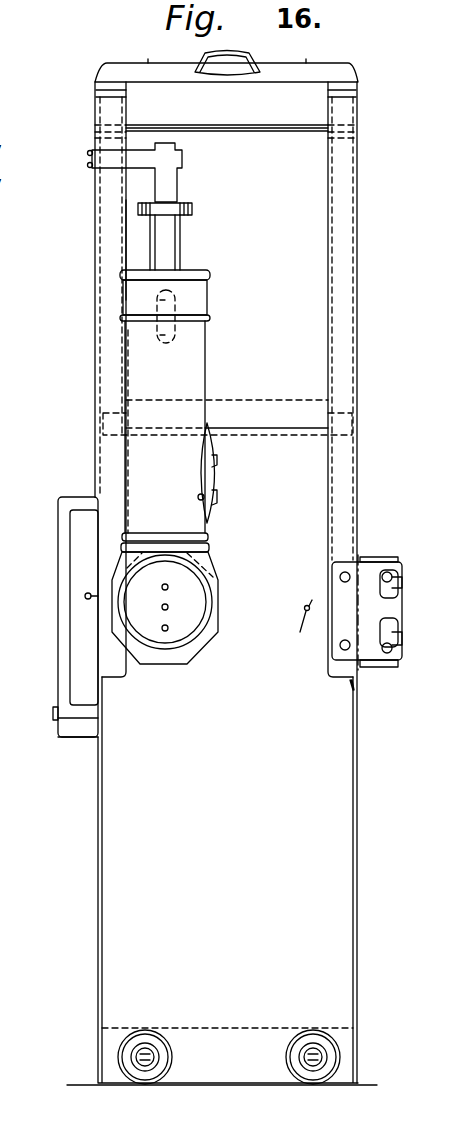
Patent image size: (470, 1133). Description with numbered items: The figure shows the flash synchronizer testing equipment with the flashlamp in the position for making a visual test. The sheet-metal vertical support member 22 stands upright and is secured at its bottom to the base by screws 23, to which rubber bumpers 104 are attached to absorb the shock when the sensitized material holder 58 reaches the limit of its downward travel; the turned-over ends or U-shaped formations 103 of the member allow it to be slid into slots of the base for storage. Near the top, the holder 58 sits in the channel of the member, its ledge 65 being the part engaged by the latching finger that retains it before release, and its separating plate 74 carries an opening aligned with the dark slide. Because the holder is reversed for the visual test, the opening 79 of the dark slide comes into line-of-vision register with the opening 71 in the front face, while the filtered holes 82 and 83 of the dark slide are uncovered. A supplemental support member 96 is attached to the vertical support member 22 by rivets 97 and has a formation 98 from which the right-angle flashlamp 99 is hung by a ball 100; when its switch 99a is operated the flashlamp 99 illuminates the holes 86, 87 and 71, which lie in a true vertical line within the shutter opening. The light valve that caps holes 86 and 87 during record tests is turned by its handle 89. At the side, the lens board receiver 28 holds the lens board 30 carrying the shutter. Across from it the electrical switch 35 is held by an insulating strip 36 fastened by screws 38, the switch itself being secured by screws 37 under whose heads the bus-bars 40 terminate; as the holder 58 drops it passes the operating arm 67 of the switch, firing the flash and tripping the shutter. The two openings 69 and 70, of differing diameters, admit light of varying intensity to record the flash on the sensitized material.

The vertical support member 22 is at (336, 784).
The screws 23 is at (148, 1048).
The lens board receiver 28 is at (80, 738).
The lens board 30 is at (80, 572).
The electrical switch 35 is at (386, 668).
The insulating strip 36 is at (373, 574).
The screws 37 is at (392, 577).
The screws 38 is at (340, 577).
The bus-bars 40 is at (395, 598).
The sensitized material holder 58 is at (268, 432).
The ledge 65 is at (267, 133).
The operating arm 67 is at (350, 688).
The opening 69 is at (300, 595).
The opening 70 is at (297, 631).
The opening 71 is at (169, 607).
The separating plate 74 is at (302, 340).
The opening 79 is at (176, 322).
The hole 82 is at (172, 342).
The hole 83 is at (182, 296).
The hole 86 is at (168, 629).
The hole 87 is at (169, 586).
The handle 89 is at (87, 600).
The supplemental support member 96 is at (165, 188).
The rivets 97 is at (88, 151).
The formation 98 is at (192, 210).
The flashlamp 99 is at (182, 380).
The switch 99a is at (216, 470).
The ball 100 is at (180, 246).
The U-shaped formations 103 is at (340, 248).
The rubber bumpers 104 is at (174, 1061).